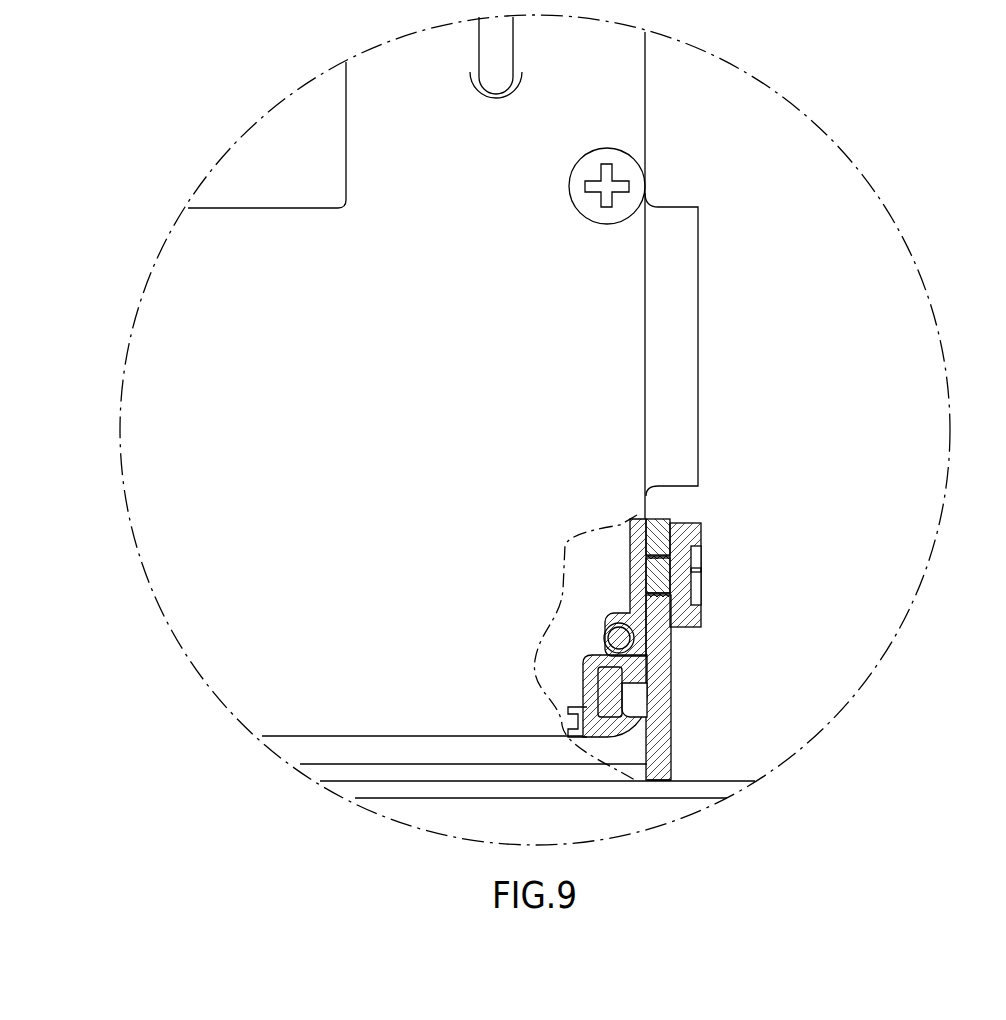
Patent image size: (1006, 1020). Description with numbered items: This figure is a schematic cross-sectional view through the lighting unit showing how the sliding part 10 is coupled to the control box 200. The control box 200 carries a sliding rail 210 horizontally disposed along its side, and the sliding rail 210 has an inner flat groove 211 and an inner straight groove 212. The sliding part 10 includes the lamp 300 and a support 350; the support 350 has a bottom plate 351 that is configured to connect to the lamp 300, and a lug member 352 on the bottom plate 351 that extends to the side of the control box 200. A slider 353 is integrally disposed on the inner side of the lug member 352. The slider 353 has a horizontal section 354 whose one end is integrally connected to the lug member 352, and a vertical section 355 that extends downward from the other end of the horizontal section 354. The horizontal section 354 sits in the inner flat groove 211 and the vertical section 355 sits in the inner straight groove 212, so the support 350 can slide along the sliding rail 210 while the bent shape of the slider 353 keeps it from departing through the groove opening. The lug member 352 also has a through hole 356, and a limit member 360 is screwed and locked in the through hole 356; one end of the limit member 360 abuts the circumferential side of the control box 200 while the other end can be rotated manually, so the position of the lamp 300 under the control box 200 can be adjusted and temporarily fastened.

The sliding part 10 is at (493, 487).
The control box 200 is at (660, 127).
The sliding rail 210 is at (497, 642).
The inner flat groove 211 is at (607, 630).
The inner straight groove 212 is at (598, 697).
The lamp 300 is at (328, 730).
The support 350 is at (738, 700).
The bottom plate 351 is at (632, 773).
The lug member 352 is at (671, 720).
The slider 353 is at (583, 673).
The horizontal section 354 is at (491, 574).
The vertical section 355 is at (473, 672).
The through hole 356 is at (670, 580).
The limit member 360 is at (697, 535).